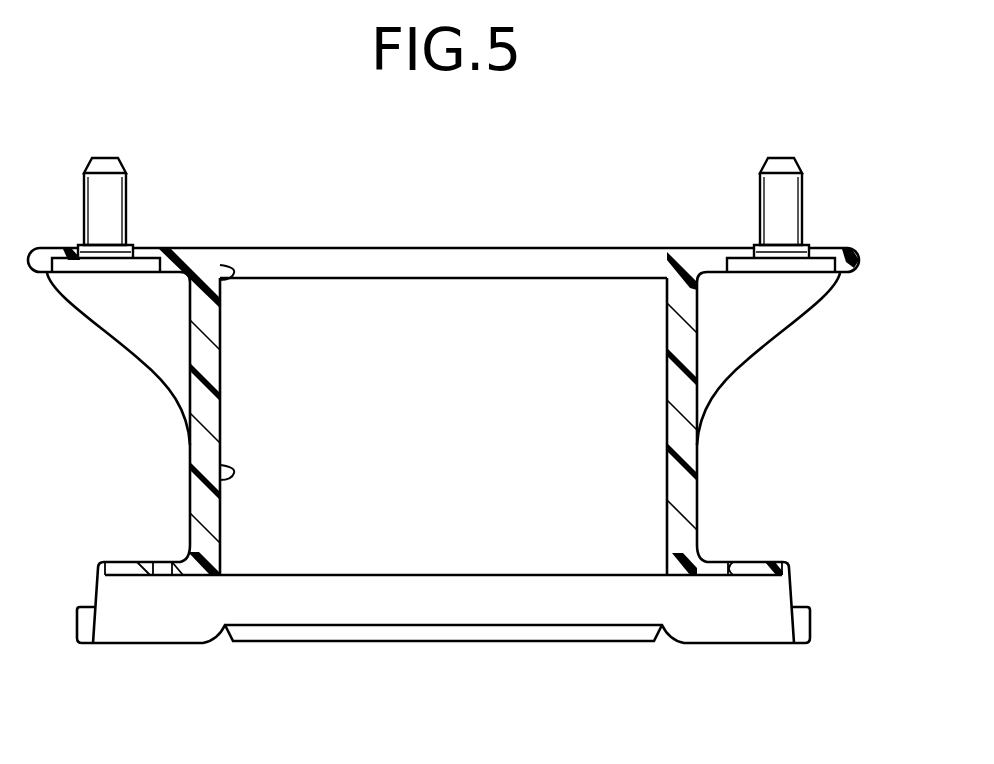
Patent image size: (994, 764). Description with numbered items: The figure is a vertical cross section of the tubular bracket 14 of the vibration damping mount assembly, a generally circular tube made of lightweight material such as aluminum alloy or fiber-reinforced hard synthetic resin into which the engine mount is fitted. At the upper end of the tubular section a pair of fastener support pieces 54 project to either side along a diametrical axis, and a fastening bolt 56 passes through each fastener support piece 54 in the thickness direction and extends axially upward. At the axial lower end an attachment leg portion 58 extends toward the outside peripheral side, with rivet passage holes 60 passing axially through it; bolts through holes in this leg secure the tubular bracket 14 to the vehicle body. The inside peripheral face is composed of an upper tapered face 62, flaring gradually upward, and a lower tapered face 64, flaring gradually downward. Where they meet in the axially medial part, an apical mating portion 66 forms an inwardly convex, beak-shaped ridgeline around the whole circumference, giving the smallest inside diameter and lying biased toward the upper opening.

The tubular bracket 14 is at (822, 134).
The fastener support piece 54 is at (842, 255).
The fastening bolt 56 is at (108, 198).
The attachment leg portion 58 is at (752, 572).
The rivet passage hole 60 is at (163, 567).
The upper tapered face 62 is at (220, 283).
The lower tapered face 64 is at (222, 480).
The apical mating portion 66 is at (472, 278).